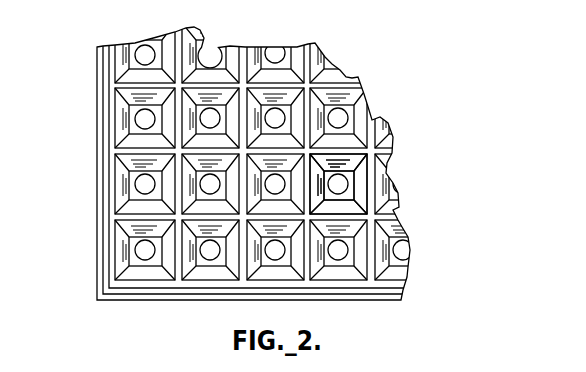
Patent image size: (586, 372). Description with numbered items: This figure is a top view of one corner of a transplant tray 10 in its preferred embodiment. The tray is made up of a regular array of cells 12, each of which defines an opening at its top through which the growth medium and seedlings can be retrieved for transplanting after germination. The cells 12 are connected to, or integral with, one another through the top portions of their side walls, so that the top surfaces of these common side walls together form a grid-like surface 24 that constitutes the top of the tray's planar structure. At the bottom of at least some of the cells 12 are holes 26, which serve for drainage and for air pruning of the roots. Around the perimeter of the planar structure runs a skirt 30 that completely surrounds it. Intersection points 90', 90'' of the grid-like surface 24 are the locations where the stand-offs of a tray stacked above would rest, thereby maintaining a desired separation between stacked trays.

The tray 10 is at (272, 157).
The cells 12 is at (294, 43).
The grid-like surface 24 is at (313, 186).
The holes 26 is at (140, 116).
The skirt 30 is at (108, 252).
The intersection point 90' is at (212, 210).
The intersection point 90'' is at (211, 168).